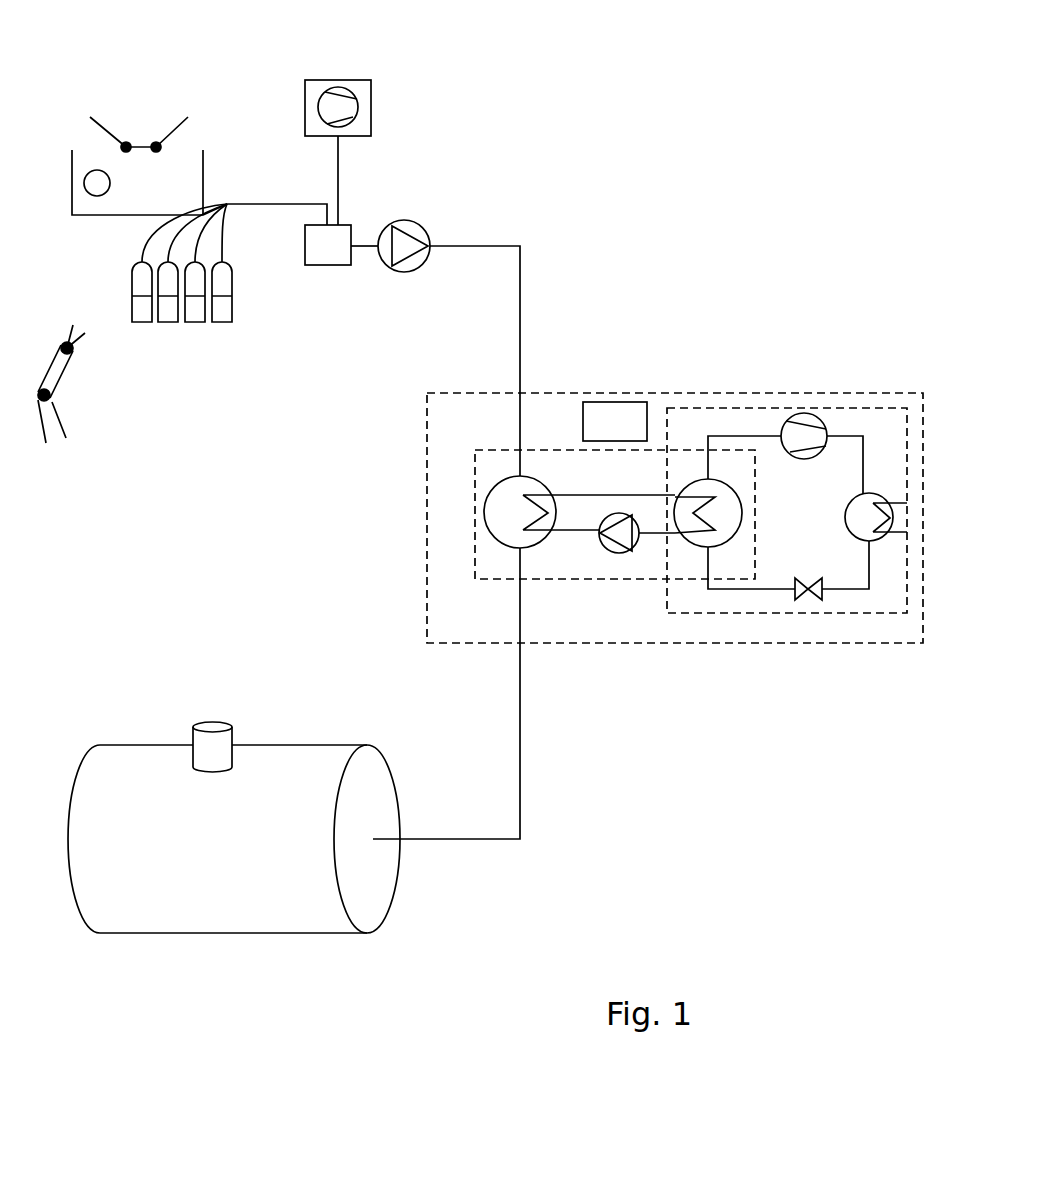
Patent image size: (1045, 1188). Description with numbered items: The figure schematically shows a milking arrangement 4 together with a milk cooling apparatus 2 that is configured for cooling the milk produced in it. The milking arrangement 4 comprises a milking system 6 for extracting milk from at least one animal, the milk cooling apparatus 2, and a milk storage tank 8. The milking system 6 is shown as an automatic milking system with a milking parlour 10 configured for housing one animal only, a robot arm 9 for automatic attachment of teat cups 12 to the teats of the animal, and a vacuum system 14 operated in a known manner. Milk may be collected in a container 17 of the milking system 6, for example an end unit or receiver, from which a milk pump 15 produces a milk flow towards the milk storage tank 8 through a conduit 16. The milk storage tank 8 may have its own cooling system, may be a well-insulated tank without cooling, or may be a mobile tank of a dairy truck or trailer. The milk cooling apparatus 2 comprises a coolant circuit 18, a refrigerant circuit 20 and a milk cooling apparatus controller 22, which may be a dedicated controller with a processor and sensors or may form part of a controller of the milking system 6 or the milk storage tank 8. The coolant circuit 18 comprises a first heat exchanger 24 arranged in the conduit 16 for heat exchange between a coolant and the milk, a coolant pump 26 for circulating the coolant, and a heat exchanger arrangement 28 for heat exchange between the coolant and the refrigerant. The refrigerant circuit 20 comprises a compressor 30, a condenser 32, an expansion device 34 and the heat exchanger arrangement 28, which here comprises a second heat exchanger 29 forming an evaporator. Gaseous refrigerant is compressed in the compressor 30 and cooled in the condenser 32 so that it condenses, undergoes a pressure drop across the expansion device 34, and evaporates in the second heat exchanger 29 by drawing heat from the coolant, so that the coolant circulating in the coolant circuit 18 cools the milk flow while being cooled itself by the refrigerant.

The milk cooling apparatus 2 is at (690, 645).
The milking arrangement 4 is at (551, 140).
The milking system 6 is at (129, 80).
The milk storage tank 8 is at (197, 860).
The robot arm 9 is at (50, 417).
The milking parlour 10 is at (102, 215).
The teat cups 12 is at (222, 322).
The vacuum system 14 is at (367, 88).
The milk pump 15 is at (410, 223).
The conduit 16 is at (472, 245).
The container 17 is at (325, 257).
The coolant circuit 18 is at (573, 580).
The refrigerant circuit 20 is at (833, 615).
The milk cooling apparatus controller 22 is at (601, 436).
The first heat exchanger 24 is at (500, 548).
The coolant pump 26 is at (612, 555).
The heat exchanger arrangement 28 is at (694, 470).
The second heat exchanger 29 is at (695, 550).
The compressor 30 is at (790, 432).
The condenser 32 is at (866, 505).
The expansion device 34 is at (797, 598).